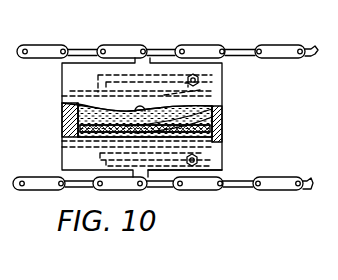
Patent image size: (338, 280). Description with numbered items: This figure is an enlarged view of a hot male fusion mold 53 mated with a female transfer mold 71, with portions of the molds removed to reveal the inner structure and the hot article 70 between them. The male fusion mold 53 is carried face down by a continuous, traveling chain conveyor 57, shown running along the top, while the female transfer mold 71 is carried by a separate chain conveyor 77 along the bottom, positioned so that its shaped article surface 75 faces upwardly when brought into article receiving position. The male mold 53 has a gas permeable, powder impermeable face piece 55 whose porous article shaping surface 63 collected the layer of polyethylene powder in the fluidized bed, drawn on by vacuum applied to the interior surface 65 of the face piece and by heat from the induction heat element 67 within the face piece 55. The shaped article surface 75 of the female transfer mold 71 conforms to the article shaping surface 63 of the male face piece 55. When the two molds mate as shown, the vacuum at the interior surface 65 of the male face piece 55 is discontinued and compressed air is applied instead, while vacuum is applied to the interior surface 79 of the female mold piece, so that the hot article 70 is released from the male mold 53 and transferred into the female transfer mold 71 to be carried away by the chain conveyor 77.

The male fusion mold 53 is at (62, 67).
The gas permeable, powder impermeable face piece 55 is at (62, 105).
The continuous, traveling chain conveyor 57 is at (208, 45).
The article shaping surface 63 is at (67, 140).
The interior surface 65 is at (70, 91).
The induction heat element 67 is at (216, 90).
The hot article 70 is at (62, 122).
The female transfer mold 71 is at (222, 165).
The shaped article surface 75 is at (218, 108).
The chain conveyor 77 is at (227, 188).
The interior surface 79 is at (222, 153).